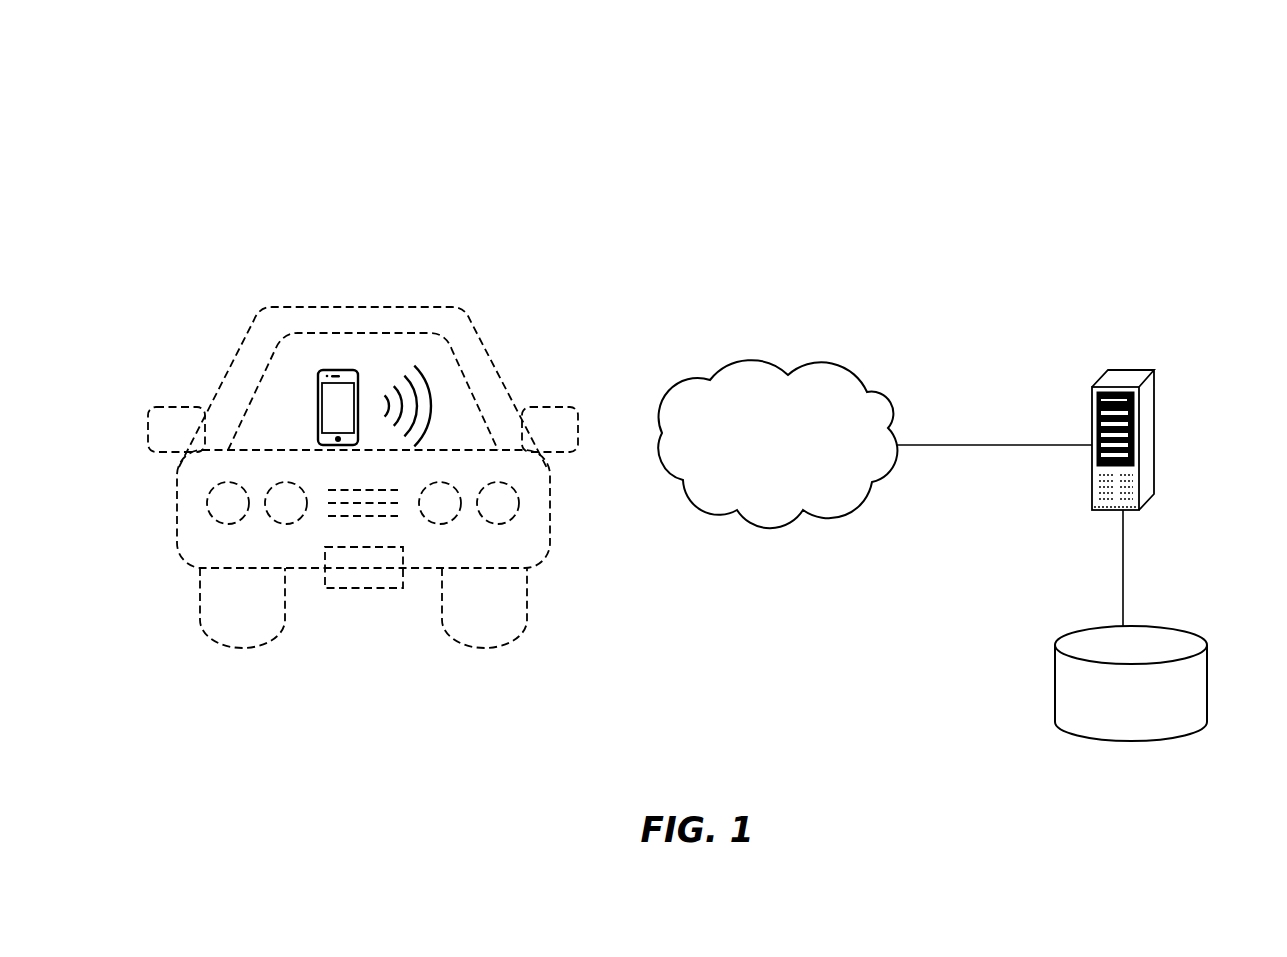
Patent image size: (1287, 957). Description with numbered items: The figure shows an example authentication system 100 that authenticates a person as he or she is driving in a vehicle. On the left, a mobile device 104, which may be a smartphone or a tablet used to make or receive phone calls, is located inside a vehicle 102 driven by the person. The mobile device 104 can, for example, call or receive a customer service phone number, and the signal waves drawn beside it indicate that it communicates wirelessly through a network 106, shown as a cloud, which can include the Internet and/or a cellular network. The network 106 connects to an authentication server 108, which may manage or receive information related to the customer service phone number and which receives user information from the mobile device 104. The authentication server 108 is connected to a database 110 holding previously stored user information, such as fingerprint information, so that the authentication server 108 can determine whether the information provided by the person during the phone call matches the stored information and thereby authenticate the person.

The authentication system 100 is at (1100, 171).
The vehicle 102 is at (455, 307).
The mobile device 104 is at (348, 372).
The network 106 is at (832, 362).
The authentication server 108 is at (1132, 370).
The database 110 is at (1183, 632).